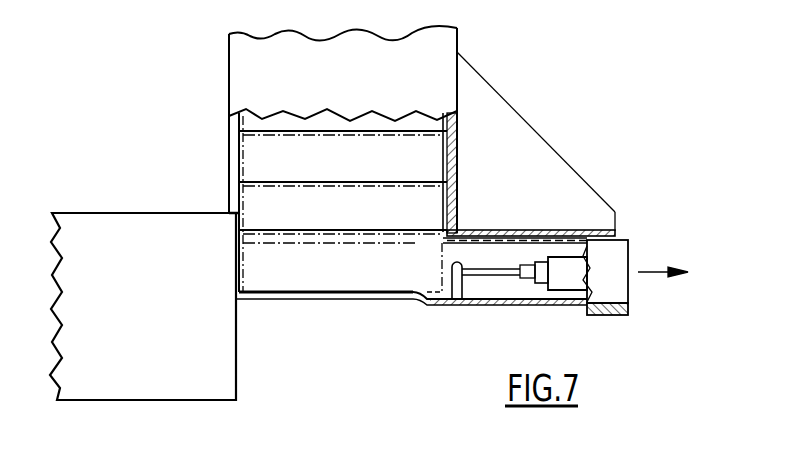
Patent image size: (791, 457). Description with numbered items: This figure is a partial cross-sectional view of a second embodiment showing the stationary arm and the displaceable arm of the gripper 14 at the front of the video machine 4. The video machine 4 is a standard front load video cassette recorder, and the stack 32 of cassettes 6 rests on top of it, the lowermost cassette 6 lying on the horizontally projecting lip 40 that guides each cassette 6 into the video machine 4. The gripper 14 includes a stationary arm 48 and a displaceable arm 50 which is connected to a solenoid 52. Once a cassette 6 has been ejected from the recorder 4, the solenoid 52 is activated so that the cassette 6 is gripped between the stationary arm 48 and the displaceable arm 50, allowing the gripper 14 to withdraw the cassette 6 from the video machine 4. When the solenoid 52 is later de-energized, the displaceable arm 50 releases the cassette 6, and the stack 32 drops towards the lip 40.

The video machine 4 is at (137, 226).
The cassette 6 is at (363, 282).
The gripper 14 is at (633, 307).
The stack of cassettes 32 is at (466, 222).
The horizontally projecting lip 40 is at (303, 300).
The stationary arm 48 is at (507, 230).
The displaceable arm 50 is at (440, 305).
The solenoid 52 is at (560, 284).